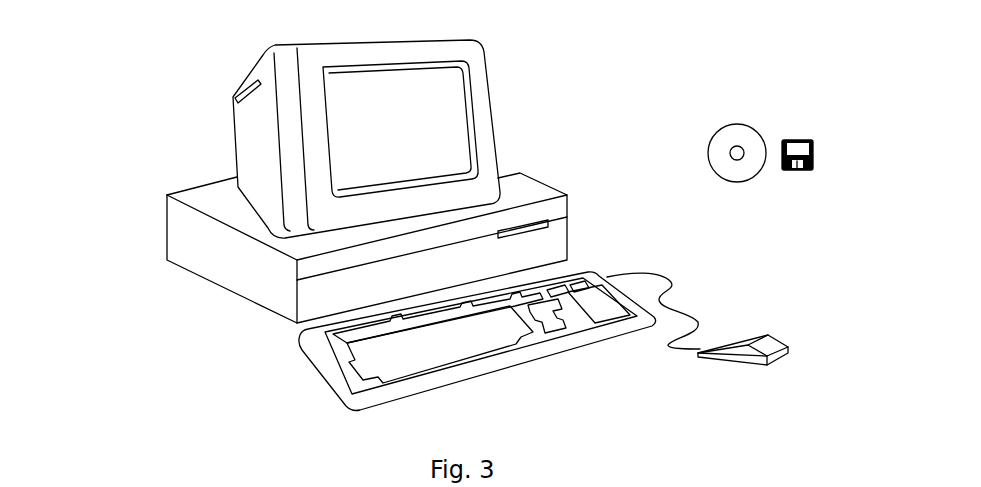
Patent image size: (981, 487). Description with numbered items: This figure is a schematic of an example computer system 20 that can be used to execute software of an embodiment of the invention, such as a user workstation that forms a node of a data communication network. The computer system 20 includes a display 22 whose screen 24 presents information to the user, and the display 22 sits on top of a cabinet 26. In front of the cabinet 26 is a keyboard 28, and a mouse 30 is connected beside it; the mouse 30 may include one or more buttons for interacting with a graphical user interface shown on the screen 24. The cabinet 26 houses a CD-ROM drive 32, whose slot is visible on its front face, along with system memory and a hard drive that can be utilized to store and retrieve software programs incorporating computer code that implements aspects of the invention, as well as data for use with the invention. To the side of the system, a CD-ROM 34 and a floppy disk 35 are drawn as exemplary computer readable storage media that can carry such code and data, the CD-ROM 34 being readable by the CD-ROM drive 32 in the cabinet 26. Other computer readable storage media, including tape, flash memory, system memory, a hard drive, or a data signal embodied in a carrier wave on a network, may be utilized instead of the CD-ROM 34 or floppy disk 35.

The computer system 20 is at (665, 23).
The display 22 is at (493, 138).
The screen 24 is at (461, 93).
The cabinet 26 is at (391, 266).
The keyboard 28 is at (480, 375).
The mouse 30 is at (781, 338).
The CD-ROM drive 32 is at (548, 221).
The CD-ROM 34 is at (733, 126).
The floppy disk 35 is at (798, 139).